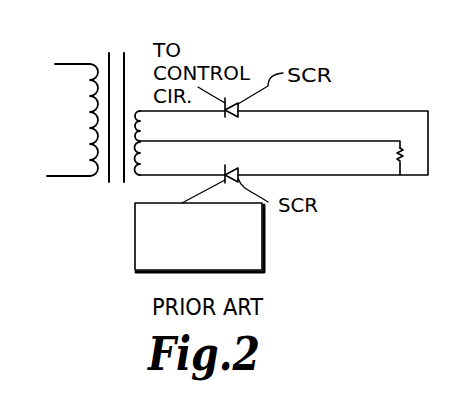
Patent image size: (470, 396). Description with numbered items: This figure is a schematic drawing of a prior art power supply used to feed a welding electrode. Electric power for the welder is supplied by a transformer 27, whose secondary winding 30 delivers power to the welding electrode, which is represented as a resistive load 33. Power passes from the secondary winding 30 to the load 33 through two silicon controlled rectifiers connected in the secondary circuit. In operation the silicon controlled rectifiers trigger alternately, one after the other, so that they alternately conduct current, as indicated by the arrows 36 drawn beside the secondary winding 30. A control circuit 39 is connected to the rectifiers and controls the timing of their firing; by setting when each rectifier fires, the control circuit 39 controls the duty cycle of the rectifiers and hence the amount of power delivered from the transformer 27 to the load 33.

The transformer 27 is at (100, 206).
The secondary winding 30 is at (135, 198).
The resistive load 33 is at (397, 157).
The arrows 36 is at (145, 131).
The control circuit 39 is at (262, 257).